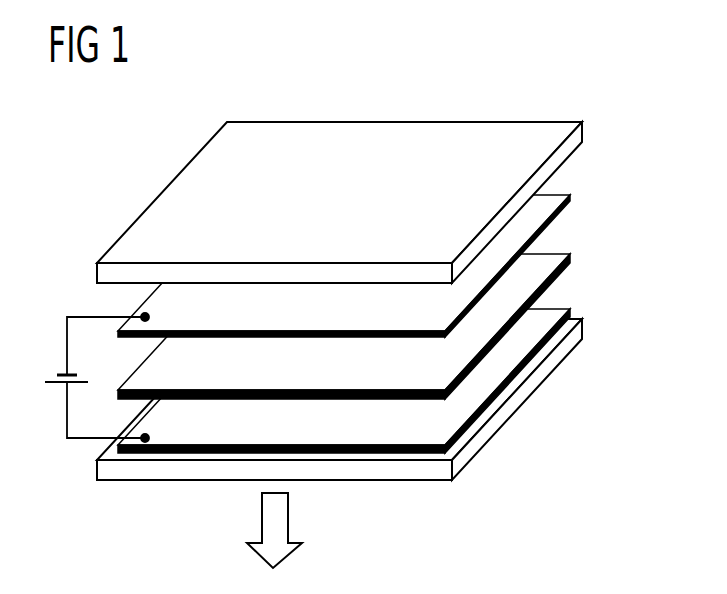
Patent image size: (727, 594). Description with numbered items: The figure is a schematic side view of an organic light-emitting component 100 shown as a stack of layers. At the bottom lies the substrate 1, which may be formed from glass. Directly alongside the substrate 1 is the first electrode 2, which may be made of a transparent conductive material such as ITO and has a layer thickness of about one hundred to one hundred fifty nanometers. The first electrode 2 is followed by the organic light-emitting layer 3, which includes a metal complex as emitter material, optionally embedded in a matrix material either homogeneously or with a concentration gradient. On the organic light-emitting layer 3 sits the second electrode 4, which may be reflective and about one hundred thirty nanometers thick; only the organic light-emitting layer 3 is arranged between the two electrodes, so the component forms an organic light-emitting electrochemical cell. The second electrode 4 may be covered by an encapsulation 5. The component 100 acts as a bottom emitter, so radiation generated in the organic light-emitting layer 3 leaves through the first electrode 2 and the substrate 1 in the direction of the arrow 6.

The organic light-emitting component 100 is at (346, 251).
The substrate 1 is at (517, 397).
The first electrode 2 is at (543, 318).
The organic light-emitting layer 3 is at (542, 265).
The second electrode 4 is at (545, 205).
The encapsulation 5 is at (552, 132).
The arrow 6 is at (288, 522).